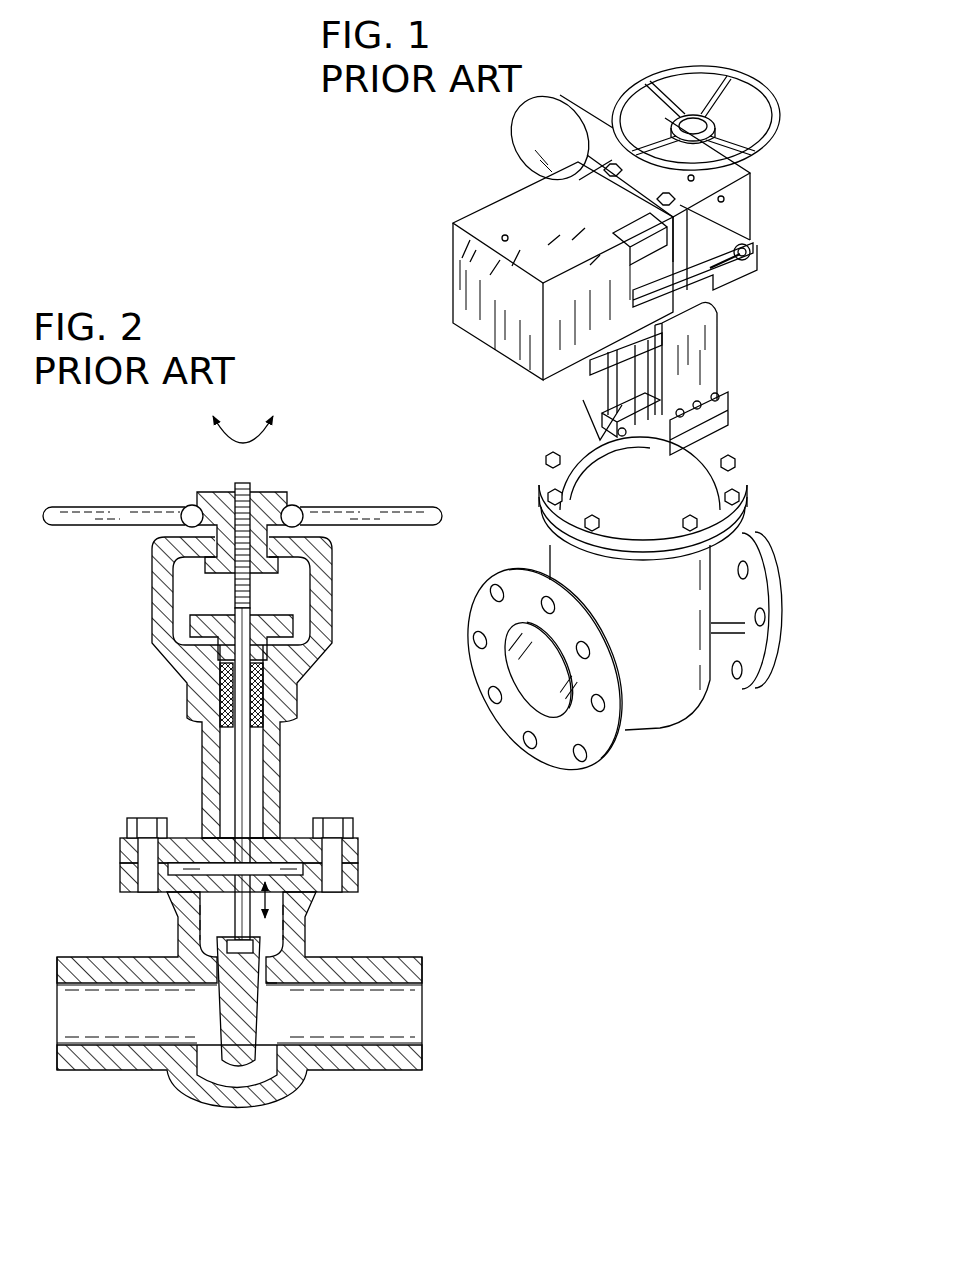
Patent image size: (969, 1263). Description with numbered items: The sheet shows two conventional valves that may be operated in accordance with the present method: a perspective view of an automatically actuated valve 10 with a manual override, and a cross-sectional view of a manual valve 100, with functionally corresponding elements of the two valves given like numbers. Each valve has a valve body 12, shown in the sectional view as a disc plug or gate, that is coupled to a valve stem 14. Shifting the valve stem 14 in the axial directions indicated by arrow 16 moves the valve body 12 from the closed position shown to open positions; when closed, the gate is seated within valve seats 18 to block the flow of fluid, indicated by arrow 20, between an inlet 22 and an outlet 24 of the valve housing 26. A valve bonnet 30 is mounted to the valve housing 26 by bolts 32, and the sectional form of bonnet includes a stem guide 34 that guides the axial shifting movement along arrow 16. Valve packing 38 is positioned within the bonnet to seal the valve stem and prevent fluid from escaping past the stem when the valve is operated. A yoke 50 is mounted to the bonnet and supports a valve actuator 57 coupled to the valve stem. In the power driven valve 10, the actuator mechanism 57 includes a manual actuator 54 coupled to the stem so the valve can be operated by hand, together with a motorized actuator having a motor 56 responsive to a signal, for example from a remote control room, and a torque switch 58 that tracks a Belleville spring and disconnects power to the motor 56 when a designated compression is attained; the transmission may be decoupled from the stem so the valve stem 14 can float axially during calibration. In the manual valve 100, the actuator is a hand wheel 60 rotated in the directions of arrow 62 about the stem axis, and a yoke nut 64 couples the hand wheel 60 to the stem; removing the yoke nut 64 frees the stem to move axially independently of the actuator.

In FIG. 1, the valve 10 is at (781, 330).
In FIG. 2, the valve body 12 is at (220, 1025).
In FIG. 1, the valve stem 14 is at (584, 383).
In FIG. 2, the valve stem 14 is at (251, 583).
In FIG. 2, the arrow 16 is at (281, 903).
In FIG. 2, the valve seats 18 is at (266, 987).
In FIG. 1, the arrow 20 is at (784, 558).
In FIG. 2, the arrow 20 is at (433, 1010).
In FIG. 1, the inlet 22 is at (783, 630).
In FIG. 2, the inlet 22 is at (421, 1068).
In FIG. 1, the outlet 24 is at (557, 771).
In FIG. 2, the outlet 24 is at (54, 1047).
In FIG. 1, the valve housing 26 is at (692, 709).
In FIG. 2, the valve housing 26 is at (363, 957).
In FIG. 1, the valve bonnet 30 is at (700, 457).
In FIG. 2, the valve bonnet 30 is at (281, 758).
In FIG. 1, the bolts 32 is at (732, 497).
In FIG. 2, the bolts 32 is at (337, 814).
In FIG. 2, the stem guide 34 is at (264, 835).
In FIG. 2, the valve packing 38 is at (264, 697).
In FIG. 1, the yoke 50 is at (707, 347).
In FIG. 2, the yoke 50 is at (327, 653).
In FIG. 1, the manual actuator 54 is at (780, 95).
In FIG. 1, the motor 56 is at (583, 115).
In FIG. 1, the valve actuator 57 is at (420, 264).
In FIG. 1, the torque switch 58 is at (447, 318).
In FIG. 2, the hand wheel 60 is at (374, 507).
In FIG. 2, the arrow 62 is at (278, 430).
In FIG. 2, the yoke nut 64 is at (267, 490).
In FIG. 2, the valve 100 is at (148, 720).